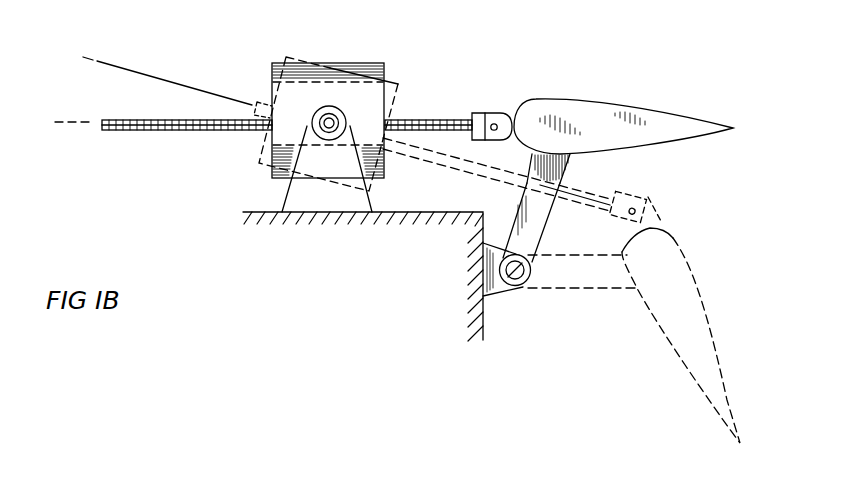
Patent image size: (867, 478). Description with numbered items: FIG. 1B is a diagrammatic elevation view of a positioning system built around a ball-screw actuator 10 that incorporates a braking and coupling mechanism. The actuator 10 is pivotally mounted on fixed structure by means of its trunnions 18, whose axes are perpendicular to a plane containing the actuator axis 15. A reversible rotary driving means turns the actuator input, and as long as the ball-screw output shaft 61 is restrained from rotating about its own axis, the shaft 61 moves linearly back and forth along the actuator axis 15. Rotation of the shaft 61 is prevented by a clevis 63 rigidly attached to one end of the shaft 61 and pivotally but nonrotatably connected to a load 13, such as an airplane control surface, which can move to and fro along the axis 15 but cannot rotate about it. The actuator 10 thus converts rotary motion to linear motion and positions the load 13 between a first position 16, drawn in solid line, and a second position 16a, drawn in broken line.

The ball-screw actuator 10 is at (272, 151).
The load 13 is at (618, 102).
The actuator axis 15 is at (90, 122).
The first position 16 is at (700, 135).
The second position 16a is at (697, 273).
The trunnions 18 is at (314, 117).
The ball-screw output shaft 61 is at (427, 118).
The clevis 63 is at (480, 113).